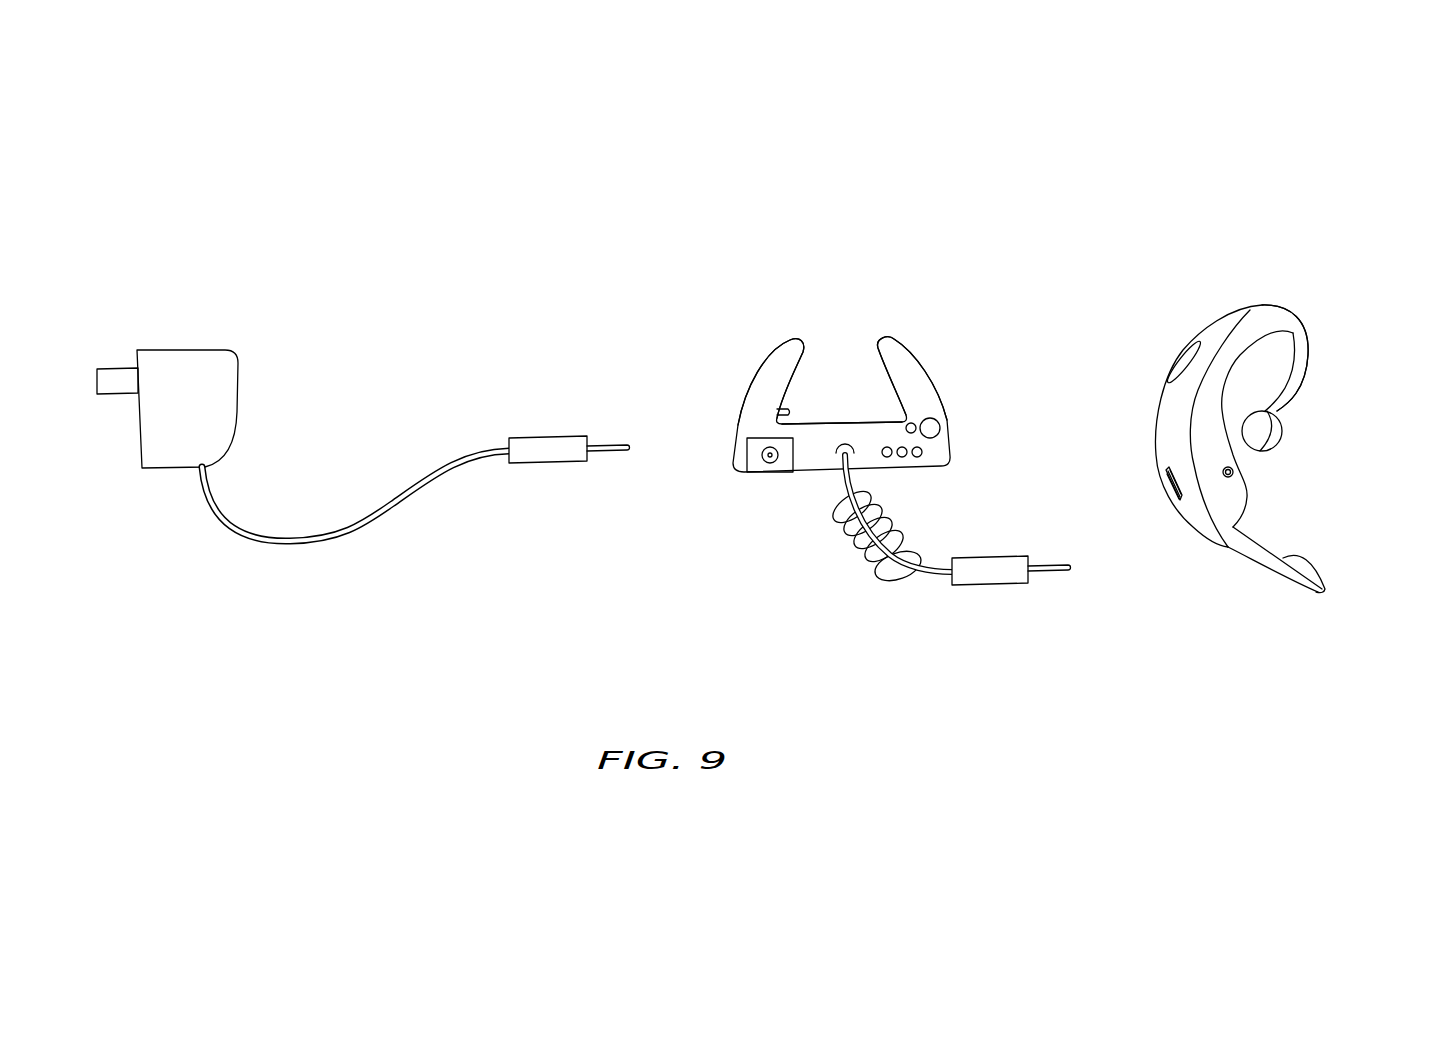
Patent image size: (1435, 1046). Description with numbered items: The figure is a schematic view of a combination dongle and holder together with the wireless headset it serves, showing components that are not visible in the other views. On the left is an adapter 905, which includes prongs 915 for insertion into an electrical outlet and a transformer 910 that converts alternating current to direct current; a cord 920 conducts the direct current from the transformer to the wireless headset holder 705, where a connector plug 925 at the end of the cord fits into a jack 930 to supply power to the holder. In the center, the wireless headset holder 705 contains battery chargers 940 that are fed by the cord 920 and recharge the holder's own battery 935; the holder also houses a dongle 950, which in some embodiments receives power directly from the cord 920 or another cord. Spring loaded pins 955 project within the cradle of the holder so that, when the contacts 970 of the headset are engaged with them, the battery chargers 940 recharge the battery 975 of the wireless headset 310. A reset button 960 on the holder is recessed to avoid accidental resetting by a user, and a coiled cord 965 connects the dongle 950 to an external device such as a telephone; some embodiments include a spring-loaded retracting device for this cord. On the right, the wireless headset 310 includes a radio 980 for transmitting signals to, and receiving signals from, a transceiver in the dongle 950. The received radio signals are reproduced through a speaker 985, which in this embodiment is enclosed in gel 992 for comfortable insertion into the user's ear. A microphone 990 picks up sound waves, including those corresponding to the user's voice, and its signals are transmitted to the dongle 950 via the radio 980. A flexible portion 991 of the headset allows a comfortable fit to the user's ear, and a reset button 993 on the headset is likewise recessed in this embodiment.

The adapter 905 is at (277, 380).
The transformer 910 is at (198, 360).
The prongs 915 is at (113, 379).
The cord 920 is at (383, 513).
The connector plug 925 is at (528, 464).
The wireless headset holder 705 is at (813, 245).
The jack 930 is at (786, 466).
The battery 935 is at (727, 403).
The battery chargers 940 is at (750, 360).
The dongle 950 is at (738, 380).
The spring loaded pins 955 is at (793, 400).
The reset button 960 is at (922, 417).
The cord 965 is at (925, 568).
The wireless headset 310 is at (1305, 296).
The contacts 970 is at (1170, 500).
The battery 975 is at (1155, 463).
The radio 980 is at (1318, 328).
The speaker 985 is at (1290, 437).
The microphone 990 is at (1322, 598).
The flexible portion 991 is at (1226, 308).
The gel 992 is at (1288, 420).
The reset button 993 is at (1238, 473).